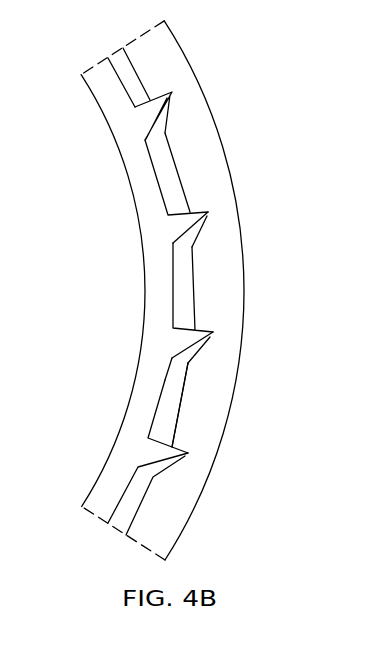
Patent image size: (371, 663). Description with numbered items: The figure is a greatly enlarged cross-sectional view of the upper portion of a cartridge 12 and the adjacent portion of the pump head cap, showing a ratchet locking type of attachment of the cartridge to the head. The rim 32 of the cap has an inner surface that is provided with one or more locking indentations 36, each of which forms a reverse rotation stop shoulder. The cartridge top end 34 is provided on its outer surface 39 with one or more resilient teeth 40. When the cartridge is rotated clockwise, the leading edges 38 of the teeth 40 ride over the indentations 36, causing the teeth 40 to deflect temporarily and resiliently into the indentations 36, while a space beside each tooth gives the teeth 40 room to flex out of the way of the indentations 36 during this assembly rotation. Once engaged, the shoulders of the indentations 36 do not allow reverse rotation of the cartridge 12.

The guide wire 12 is at (105, 121).
The rim 32 is at (242, 345).
The cartridge top end 34 is at (165, 272).
The locking indentation 36 is at (132, 170).
The leading edge of tooth 38 is at (176, 457).
The outer surface of cartridge top end 39 is at (158, 426).
The resilient tooth 40 is at (170, 337).